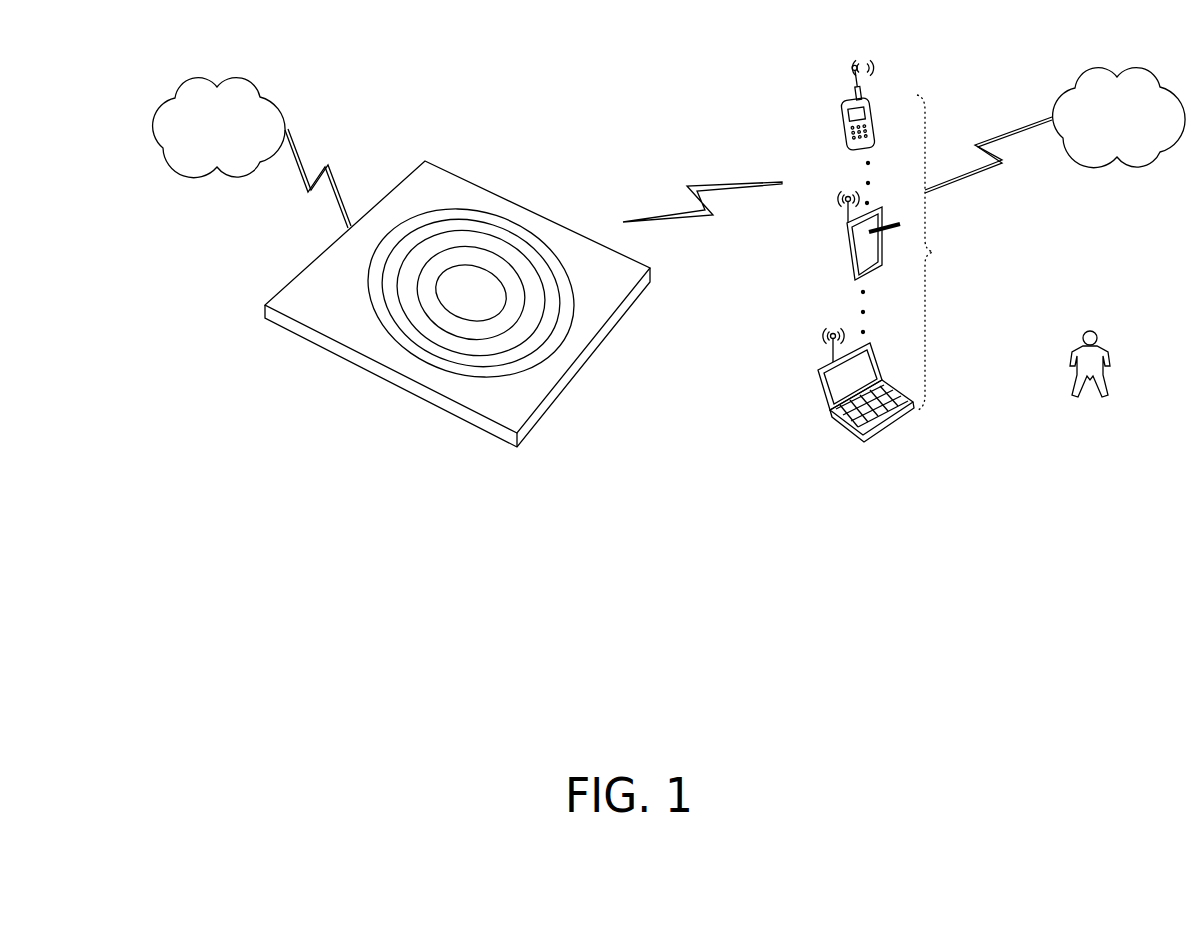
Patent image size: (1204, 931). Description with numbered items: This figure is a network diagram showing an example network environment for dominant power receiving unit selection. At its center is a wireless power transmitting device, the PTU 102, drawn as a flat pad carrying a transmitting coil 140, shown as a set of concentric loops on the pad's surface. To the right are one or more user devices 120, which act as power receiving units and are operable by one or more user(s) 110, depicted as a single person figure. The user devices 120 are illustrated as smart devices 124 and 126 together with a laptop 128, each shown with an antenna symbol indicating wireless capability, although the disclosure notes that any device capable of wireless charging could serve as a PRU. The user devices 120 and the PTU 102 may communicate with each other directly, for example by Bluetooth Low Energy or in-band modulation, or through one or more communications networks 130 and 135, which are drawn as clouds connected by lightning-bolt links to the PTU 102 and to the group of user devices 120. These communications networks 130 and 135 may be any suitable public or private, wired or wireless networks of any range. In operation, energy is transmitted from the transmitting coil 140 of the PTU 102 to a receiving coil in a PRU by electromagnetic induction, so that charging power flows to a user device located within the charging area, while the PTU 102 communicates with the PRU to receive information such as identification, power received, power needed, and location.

The wireless power transmitting device (PTU) 102 is at (418, 496).
The user(s) 110 is at (1148, 427).
The user devices 120 is at (903, 260).
The smart device 124 is at (840, 122).
The smart device 126 is at (848, 268).
The laptop 128 is at (840, 420).
The communications network 130 is at (235, 156).
The communications network 135 is at (1135, 144).
The coil 140 is at (520, 224).